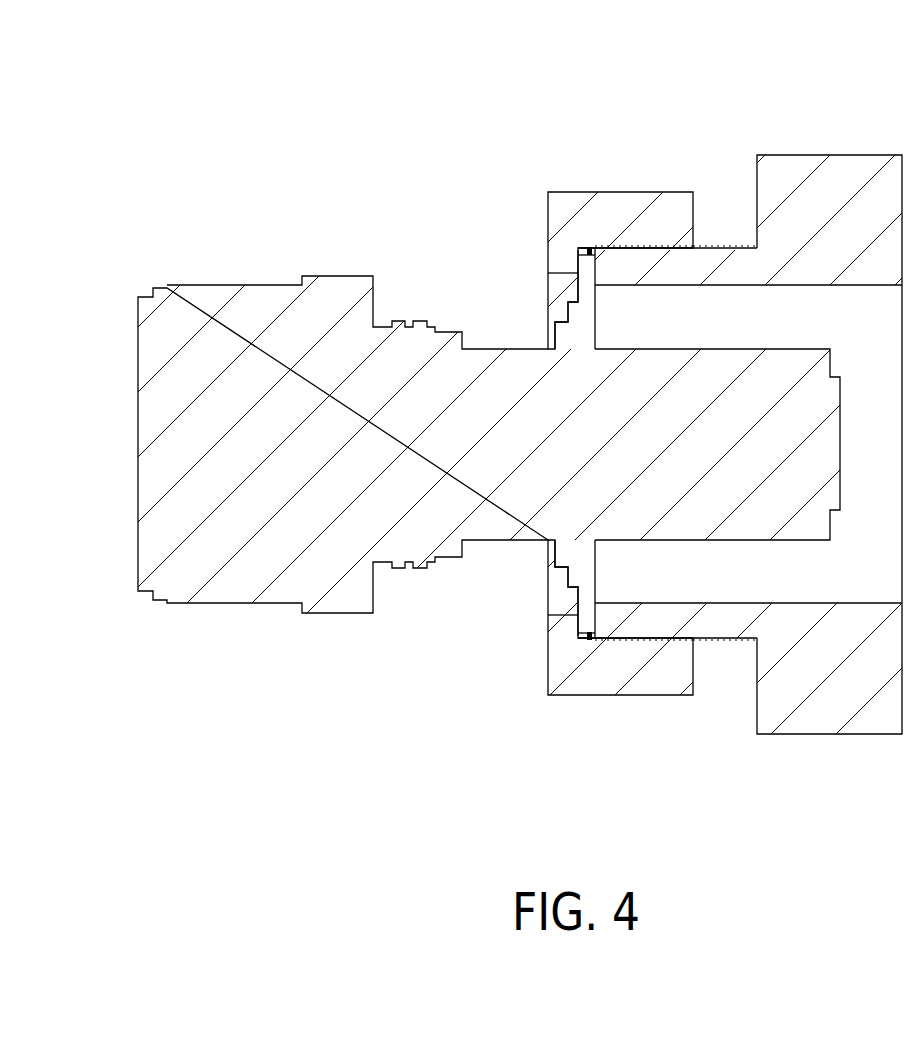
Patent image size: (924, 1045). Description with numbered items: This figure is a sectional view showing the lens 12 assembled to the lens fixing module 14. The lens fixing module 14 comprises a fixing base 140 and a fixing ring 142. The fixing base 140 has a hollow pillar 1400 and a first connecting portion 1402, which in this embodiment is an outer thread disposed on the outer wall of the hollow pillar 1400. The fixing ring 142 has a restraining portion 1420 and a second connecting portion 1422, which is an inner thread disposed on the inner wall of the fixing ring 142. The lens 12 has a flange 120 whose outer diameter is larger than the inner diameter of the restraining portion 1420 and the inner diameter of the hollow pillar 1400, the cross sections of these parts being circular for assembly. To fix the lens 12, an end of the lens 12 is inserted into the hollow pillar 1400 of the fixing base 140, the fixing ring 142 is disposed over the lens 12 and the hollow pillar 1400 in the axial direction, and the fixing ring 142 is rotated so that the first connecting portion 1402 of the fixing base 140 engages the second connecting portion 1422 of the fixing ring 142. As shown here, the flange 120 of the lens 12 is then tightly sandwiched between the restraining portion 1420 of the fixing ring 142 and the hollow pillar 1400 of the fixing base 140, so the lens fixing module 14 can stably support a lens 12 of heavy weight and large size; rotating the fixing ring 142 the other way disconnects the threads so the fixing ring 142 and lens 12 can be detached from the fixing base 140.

The lens 12 is at (220, 285).
The lens fixing module 14 is at (818, 85).
The fixing base 140 is at (790, 155).
The fixing ring 142 is at (650, 192).
The flange 120 is at (582, 641).
The hollow pillar 1400 is at (727, 629).
The first connecting portion 1402 is at (660, 638).
The restraining portion 1420 is at (565, 632).
The second connecting portion 1422 is at (641, 643).